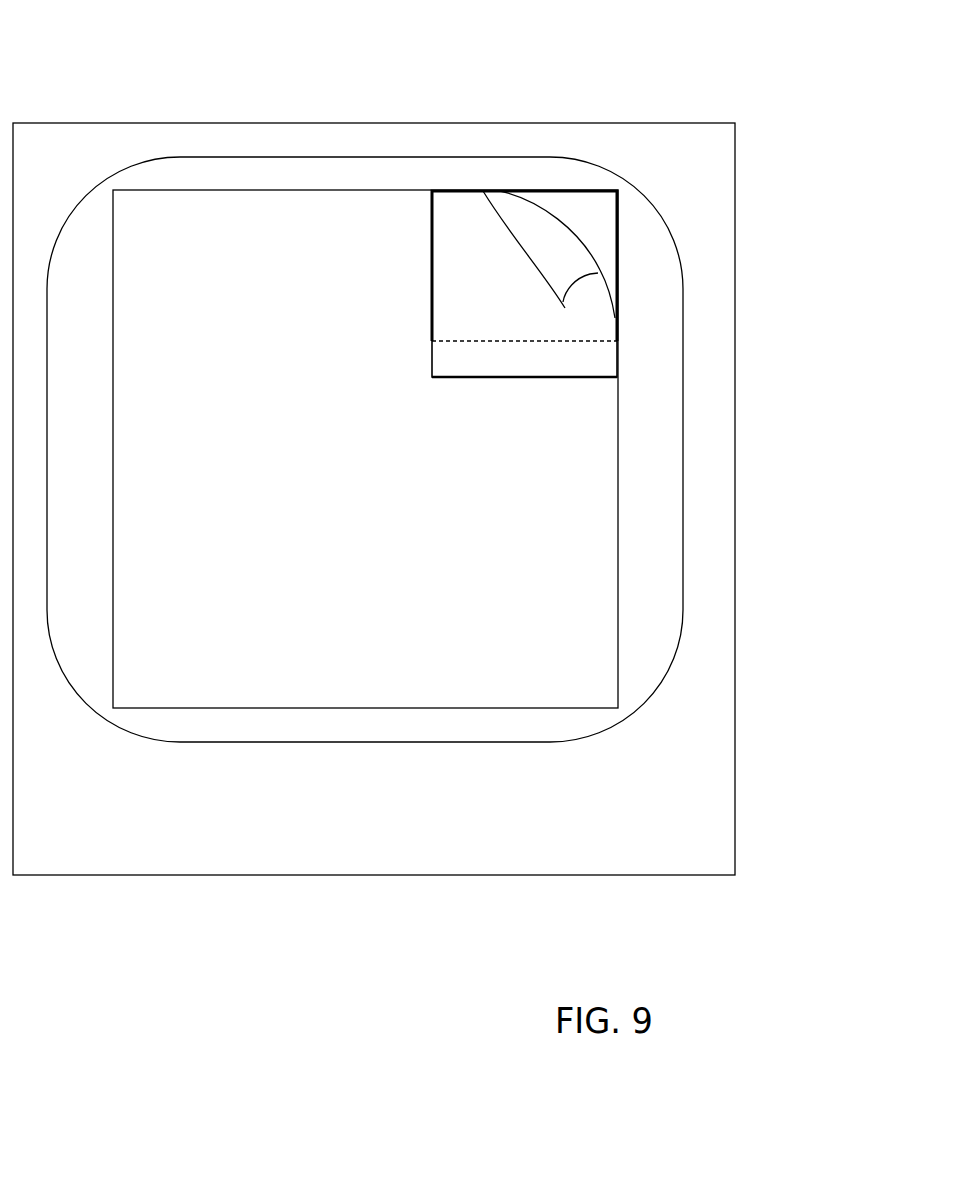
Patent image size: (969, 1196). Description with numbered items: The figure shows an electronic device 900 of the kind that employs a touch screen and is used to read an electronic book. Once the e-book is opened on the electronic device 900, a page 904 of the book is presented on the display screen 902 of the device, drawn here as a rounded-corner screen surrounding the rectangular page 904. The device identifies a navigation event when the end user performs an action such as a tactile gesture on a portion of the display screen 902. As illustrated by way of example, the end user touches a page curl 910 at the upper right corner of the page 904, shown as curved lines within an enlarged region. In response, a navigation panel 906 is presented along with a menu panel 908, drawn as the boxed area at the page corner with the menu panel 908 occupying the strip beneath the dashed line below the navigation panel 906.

The electronic device 900 is at (113, 60).
The display screen 902 is at (82, 692).
The page 904 is at (618, 658).
The navigation panel 906 is at (432, 273).
The menu panel 908 is at (600, 358).
The page curl 910 is at (565, 258).